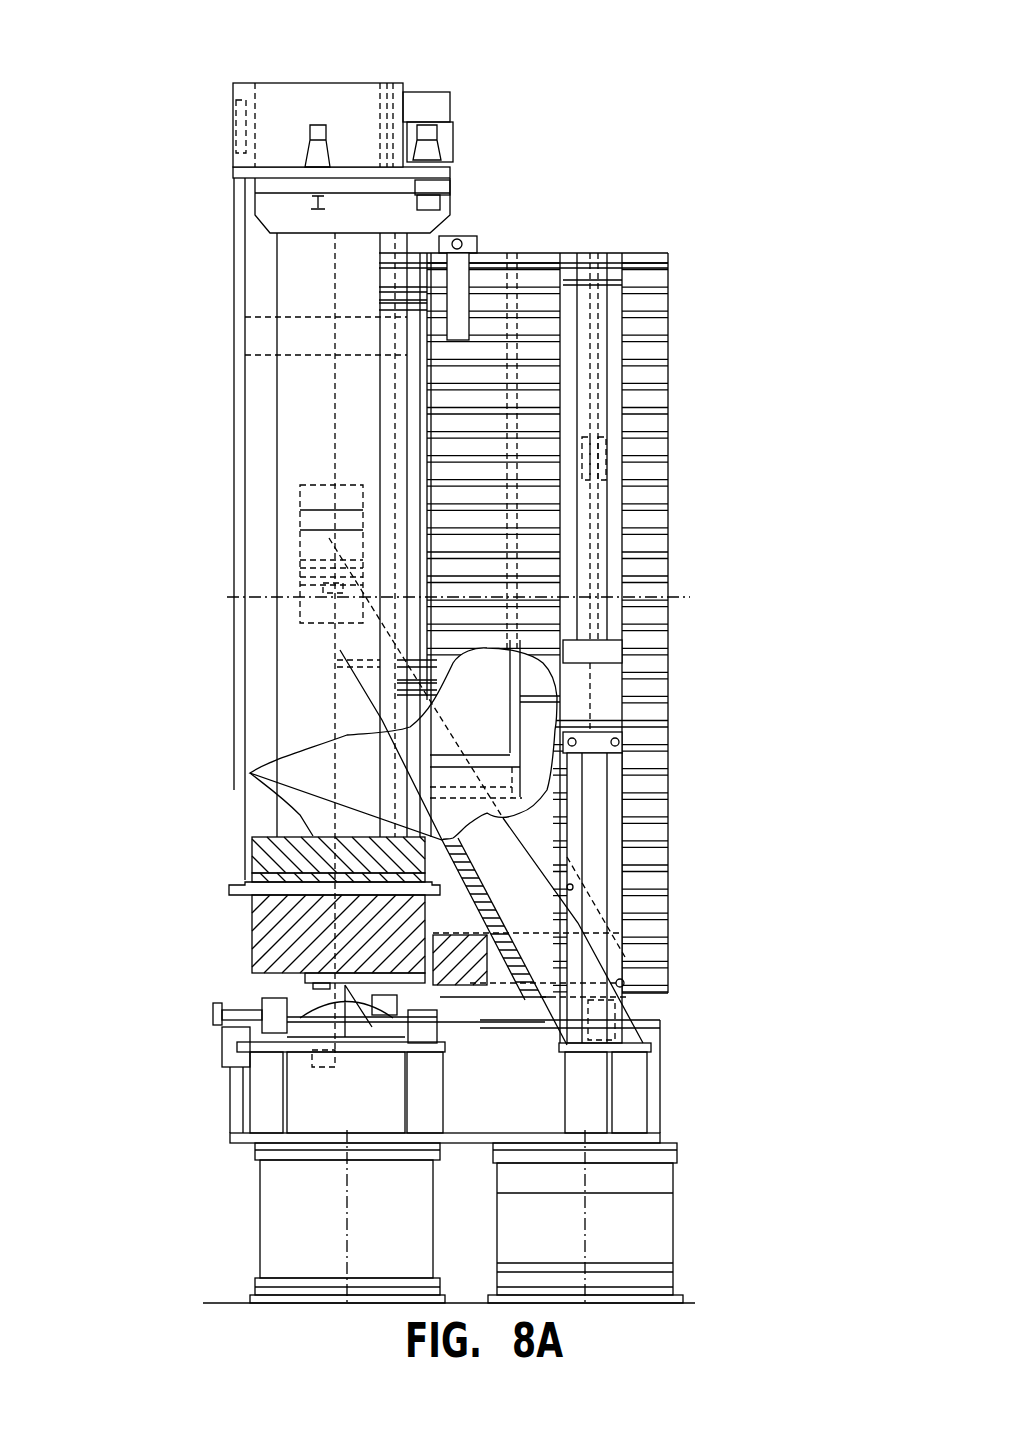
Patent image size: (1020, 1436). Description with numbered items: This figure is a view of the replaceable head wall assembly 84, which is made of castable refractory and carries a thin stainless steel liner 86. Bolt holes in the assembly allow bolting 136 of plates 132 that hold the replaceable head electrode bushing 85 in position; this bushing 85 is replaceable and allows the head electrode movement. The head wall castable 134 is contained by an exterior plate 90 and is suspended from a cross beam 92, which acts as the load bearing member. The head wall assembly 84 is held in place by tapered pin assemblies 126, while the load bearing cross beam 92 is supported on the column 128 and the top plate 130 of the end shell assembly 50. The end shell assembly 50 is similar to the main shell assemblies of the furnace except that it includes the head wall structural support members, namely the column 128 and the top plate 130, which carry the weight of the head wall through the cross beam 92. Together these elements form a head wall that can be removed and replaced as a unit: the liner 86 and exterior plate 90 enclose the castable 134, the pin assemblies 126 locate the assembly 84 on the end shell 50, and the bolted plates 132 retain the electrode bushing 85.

The end shell assembly 50 is at (553, 257).
The replaceable head wall assembly 84 is at (233, 210).
The replaceable head electrode bushing 85 is at (250, 773).
The thin stainless steel liner 86 is at (252, 840).
The exterior plate 90 is at (272, 968).
The cross beam 92 is at (290, 100).
The tapered pin assembly 126 is at (452, 140).
The column 128 is at (275, 295).
The top plate 130 is at (455, 185).
The plate 132 is at (247, 875).
The head wall castable 134 is at (262, 927).
The bolting 136 is at (229, 890).